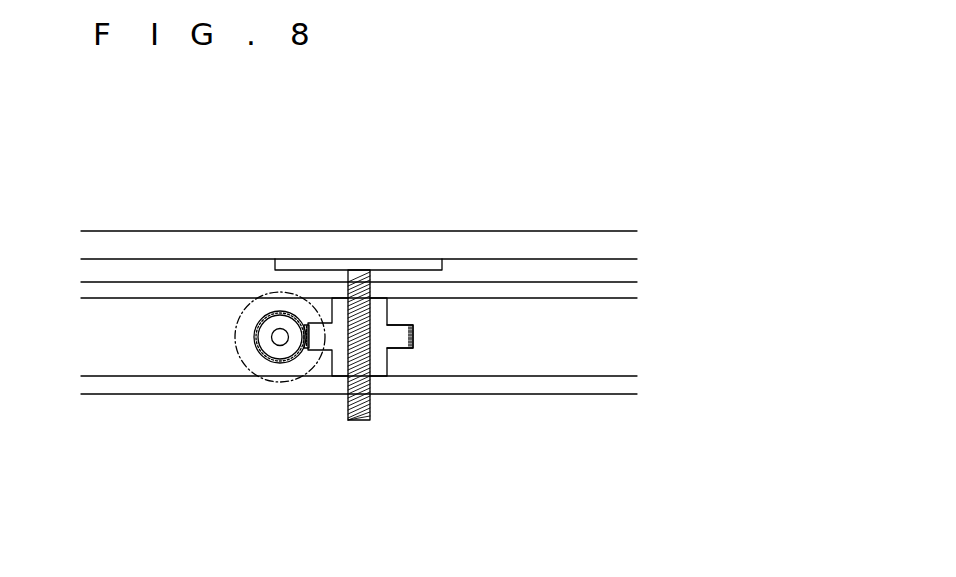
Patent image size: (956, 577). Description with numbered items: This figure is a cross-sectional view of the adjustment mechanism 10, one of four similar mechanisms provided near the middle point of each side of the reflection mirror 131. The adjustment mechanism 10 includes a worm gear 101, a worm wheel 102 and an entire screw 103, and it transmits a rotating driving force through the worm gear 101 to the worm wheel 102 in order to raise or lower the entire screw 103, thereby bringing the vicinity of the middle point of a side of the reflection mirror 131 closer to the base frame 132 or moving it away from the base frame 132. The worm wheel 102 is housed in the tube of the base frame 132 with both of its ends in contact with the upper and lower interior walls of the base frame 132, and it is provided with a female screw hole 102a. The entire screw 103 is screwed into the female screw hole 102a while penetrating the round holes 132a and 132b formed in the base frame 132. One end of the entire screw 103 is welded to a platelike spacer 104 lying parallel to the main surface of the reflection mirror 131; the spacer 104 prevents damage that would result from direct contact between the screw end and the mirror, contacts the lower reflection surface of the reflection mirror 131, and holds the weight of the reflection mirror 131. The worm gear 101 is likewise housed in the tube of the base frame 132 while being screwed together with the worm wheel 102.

The adjustment mechanism 10 is at (225, 338).
The worm gear 101 is at (257, 348).
The worm wheel 102 is at (393, 335).
The female screw hole 102a is at (372, 348).
The entire screw 103 is at (349, 421).
The spacer 104 is at (302, 263).
The reflection mirror 131 is at (568, 231).
The base frame 132 is at (545, 385).
The round hole 132a is at (370, 293).
The round hole 132b is at (346, 381).